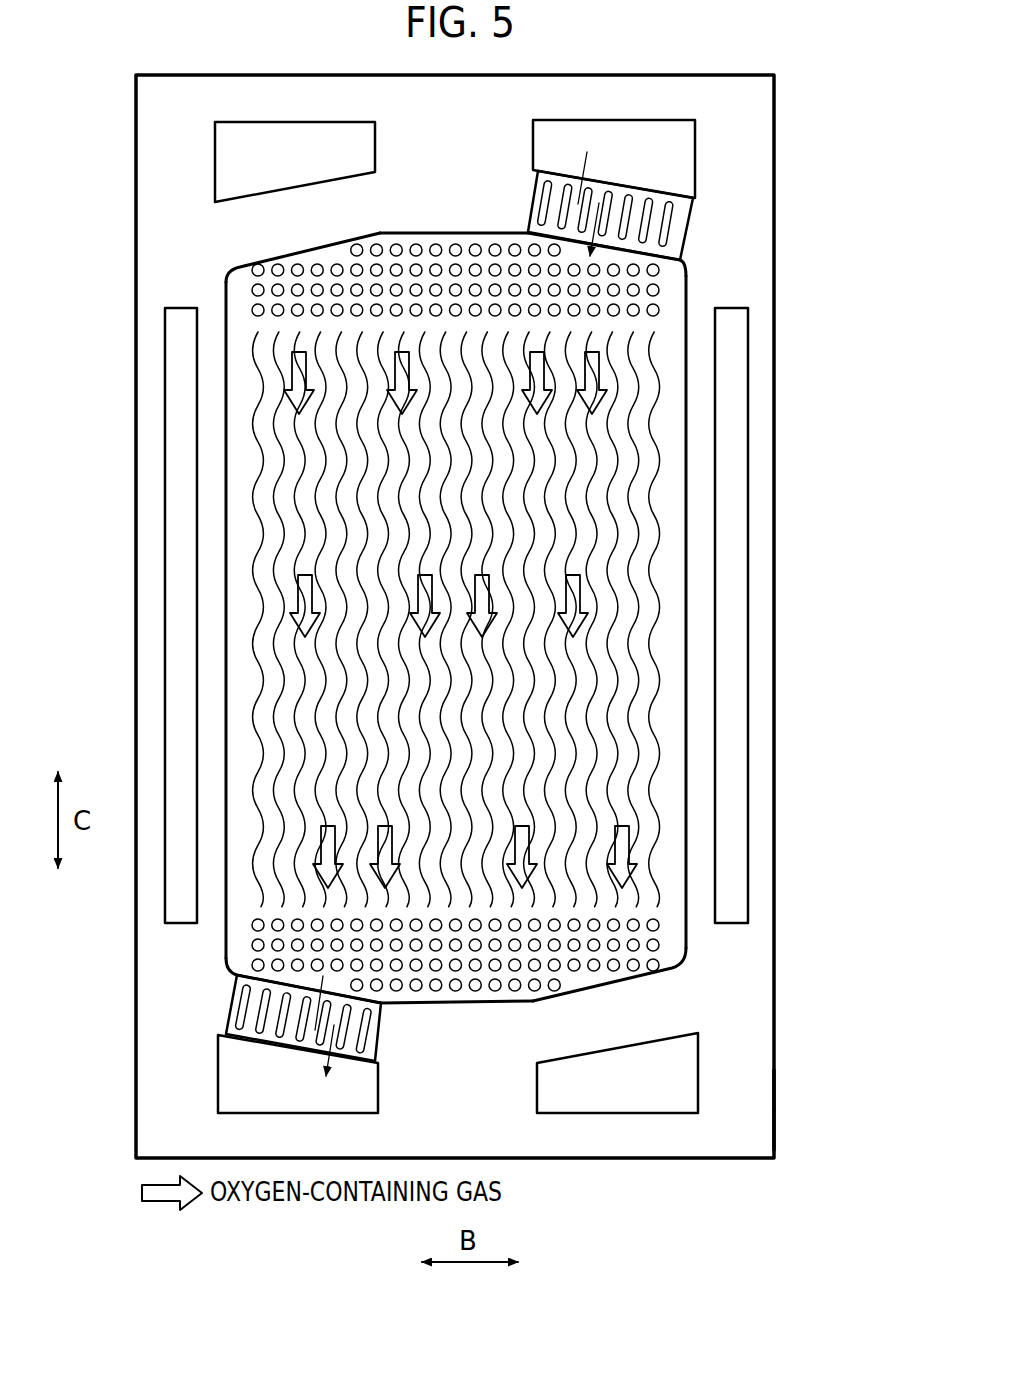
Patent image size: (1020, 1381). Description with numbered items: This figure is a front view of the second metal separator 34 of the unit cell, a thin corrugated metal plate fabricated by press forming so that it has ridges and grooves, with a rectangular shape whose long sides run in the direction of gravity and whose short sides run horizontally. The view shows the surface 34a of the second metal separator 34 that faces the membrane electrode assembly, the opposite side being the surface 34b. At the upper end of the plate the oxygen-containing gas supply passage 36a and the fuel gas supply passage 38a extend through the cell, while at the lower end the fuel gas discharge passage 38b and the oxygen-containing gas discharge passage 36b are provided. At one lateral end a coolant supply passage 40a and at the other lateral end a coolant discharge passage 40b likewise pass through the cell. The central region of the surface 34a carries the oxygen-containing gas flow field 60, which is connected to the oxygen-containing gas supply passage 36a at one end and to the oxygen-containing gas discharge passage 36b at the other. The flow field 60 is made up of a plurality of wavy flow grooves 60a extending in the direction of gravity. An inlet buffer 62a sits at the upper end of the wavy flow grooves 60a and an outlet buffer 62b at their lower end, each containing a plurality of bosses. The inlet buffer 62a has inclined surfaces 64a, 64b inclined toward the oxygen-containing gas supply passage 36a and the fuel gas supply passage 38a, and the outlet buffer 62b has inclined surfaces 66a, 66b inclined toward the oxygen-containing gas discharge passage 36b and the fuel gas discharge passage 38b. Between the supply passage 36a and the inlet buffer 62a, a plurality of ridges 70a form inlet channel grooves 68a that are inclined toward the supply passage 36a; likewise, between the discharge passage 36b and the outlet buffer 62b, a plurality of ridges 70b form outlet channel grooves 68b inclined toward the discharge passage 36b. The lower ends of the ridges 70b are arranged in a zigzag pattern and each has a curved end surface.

The second metal separator 34 is at (699, 39).
The surface 34a is at (738, 1091).
The second surface of separator 34b is at (738, 1128).
The oxygen-containing gas supply passage 36a is at (614, 159).
The oxygen-containing gas discharge passage 36b is at (298, 1074).
The fuel gas supply passage 38a is at (295, 162).
The fuel gas discharge passage 38b is at (617, 1073).
The coolant supply passage 40a is at (740, 665).
The coolant discharge passage 40b is at (173, 578).
The oxygen-containing gas flow field 60 is at (625, 613).
The wavy flow grooves 60a is at (773, 777).
The inlet buffer 62a is at (404, 246).
The outlet buffer 62b is at (507, 990).
The inclined surface 64a is at (640, 233).
The inclined surface 64b is at (278, 254).
The inclined surface 66a is at (268, 1007).
The inclined surface 66b is at (635, 982).
The inlet channel grooves 68a is at (643, 203).
The outlet channel grooves 68b is at (231, 1026).
The ridges 70a is at (534, 213).
The ridges 70b is at (380, 1040).